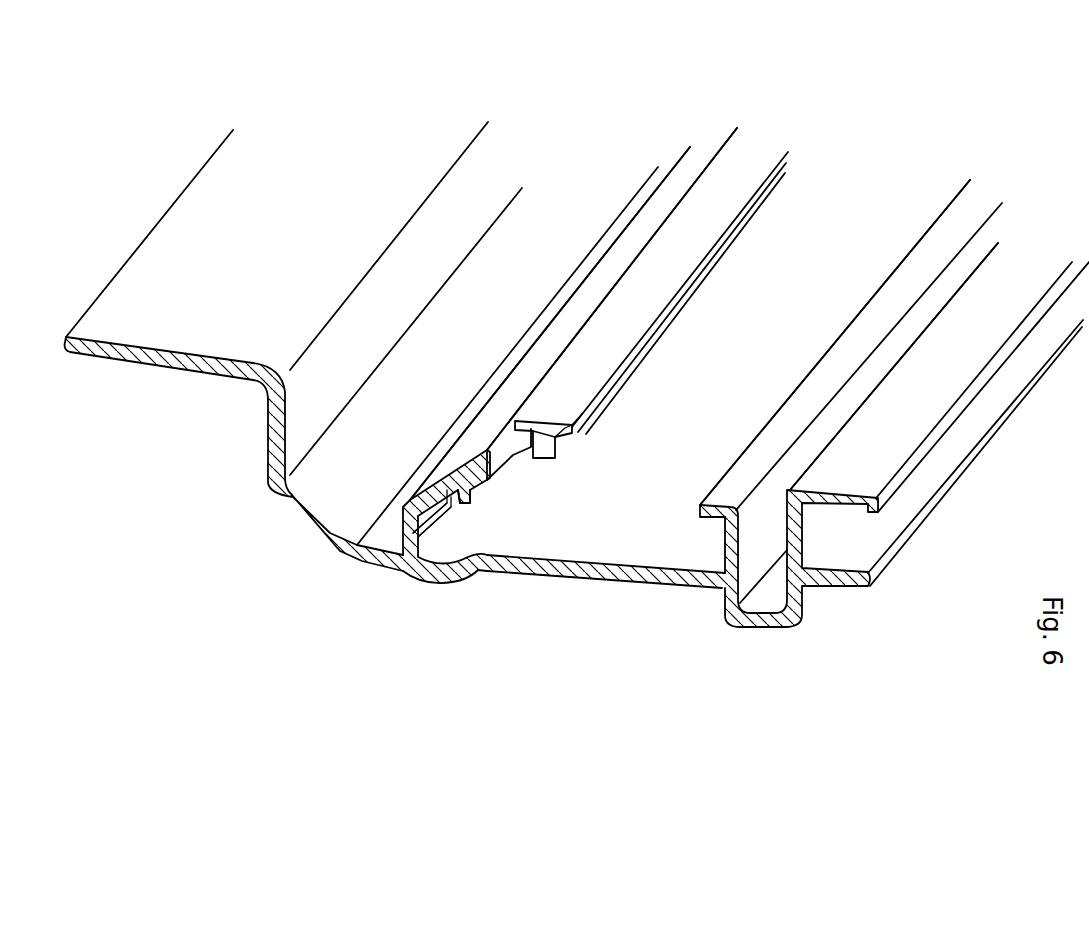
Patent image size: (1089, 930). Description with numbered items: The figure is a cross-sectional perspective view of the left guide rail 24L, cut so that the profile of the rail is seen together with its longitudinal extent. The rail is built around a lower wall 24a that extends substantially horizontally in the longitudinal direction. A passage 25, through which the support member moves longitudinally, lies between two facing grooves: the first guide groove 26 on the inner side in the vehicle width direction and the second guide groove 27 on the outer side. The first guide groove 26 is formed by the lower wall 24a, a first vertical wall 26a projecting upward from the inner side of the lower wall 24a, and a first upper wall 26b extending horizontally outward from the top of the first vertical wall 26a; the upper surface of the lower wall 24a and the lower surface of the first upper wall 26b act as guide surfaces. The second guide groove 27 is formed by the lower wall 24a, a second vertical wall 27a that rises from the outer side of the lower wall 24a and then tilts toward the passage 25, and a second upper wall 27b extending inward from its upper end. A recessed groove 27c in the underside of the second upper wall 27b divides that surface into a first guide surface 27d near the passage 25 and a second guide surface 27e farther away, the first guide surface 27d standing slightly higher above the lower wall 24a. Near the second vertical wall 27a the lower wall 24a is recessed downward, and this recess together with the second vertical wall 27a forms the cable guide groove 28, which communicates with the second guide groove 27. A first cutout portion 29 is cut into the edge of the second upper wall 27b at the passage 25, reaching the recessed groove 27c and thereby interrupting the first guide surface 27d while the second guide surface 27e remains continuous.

The left guide rail 24L is at (286, 158).
The lower wall 24a is at (640, 563).
The passage 25 is at (847, 203).
The first guide groove 26 is at (718, 565).
The first vertical wall 26a is at (990, 243).
The first upper wall 26b is at (968, 182).
The second guide groove 27 is at (514, 496).
The second vertical wall 27a is at (603, 280).
The second upper wall 27b is at (727, 145).
The recessed groove 27c is at (537, 463).
The first guide surface 27d is at (543, 457).
The second guide surface 27e is at (467, 493).
The cable guide groove 28 is at (442, 557).
The first cutout portion 29 is at (551, 431).